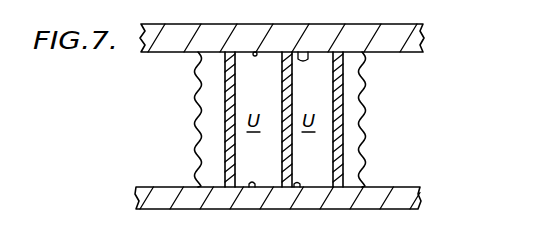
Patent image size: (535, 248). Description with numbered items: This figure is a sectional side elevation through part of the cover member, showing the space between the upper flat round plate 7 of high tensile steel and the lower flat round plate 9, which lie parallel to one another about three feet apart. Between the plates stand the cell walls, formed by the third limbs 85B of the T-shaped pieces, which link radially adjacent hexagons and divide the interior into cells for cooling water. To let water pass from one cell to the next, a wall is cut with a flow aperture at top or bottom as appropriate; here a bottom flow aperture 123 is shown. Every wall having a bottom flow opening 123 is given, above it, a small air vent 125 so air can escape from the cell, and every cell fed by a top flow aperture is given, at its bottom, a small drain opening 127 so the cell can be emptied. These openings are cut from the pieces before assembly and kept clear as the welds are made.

The upper flat round plate 7 is at (293, 53).
The lower flat round plate 9 is at (333, 202).
The air vent 125 is at (253, 55).
The third limb 85B is at (280, 135).
The bottom flow aperture 123 is at (253, 182).
The drain opening 127 is at (298, 186).